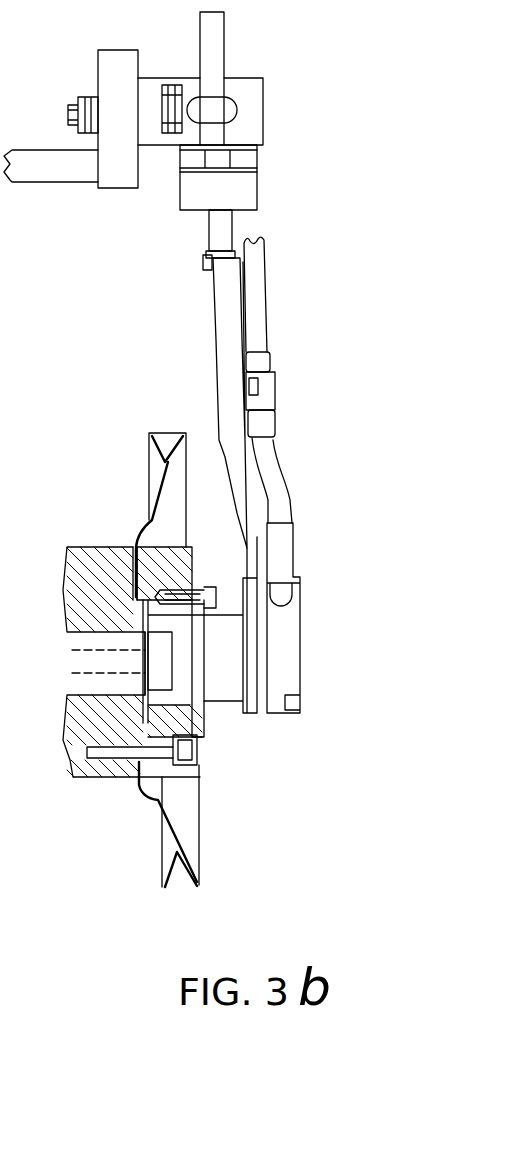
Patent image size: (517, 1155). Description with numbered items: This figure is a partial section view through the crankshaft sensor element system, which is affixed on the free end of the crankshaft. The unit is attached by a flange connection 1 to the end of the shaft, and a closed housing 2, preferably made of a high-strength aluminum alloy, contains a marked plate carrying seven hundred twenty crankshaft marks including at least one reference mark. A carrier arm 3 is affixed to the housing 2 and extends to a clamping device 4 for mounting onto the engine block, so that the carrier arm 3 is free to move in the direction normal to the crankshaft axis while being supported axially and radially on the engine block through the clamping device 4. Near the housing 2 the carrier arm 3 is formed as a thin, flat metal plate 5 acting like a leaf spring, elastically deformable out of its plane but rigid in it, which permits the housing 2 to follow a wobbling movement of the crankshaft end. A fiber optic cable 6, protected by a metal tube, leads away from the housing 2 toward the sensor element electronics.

The flange connection 1 is at (188, 712).
The closed housing 2 is at (270, 680).
The carrier arm 3 is at (227, 330).
The clamping device 4 is at (215, 190).
The metal plate 5 is at (247, 545).
The fiber optic cable 6 is at (258, 310).